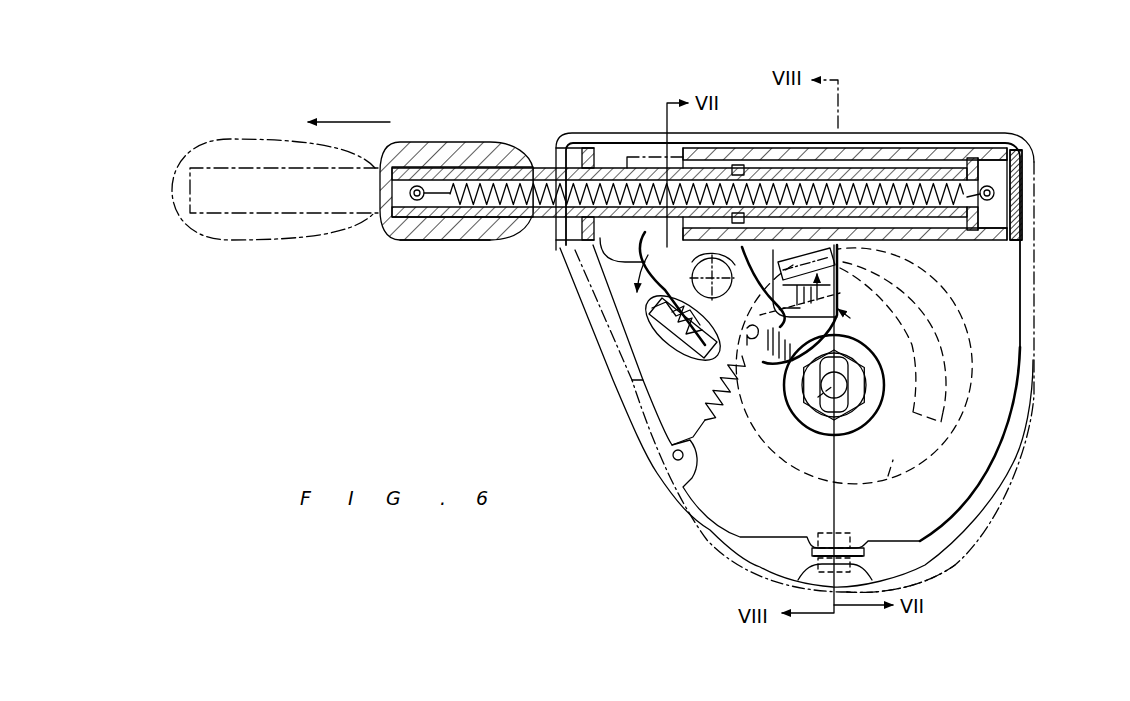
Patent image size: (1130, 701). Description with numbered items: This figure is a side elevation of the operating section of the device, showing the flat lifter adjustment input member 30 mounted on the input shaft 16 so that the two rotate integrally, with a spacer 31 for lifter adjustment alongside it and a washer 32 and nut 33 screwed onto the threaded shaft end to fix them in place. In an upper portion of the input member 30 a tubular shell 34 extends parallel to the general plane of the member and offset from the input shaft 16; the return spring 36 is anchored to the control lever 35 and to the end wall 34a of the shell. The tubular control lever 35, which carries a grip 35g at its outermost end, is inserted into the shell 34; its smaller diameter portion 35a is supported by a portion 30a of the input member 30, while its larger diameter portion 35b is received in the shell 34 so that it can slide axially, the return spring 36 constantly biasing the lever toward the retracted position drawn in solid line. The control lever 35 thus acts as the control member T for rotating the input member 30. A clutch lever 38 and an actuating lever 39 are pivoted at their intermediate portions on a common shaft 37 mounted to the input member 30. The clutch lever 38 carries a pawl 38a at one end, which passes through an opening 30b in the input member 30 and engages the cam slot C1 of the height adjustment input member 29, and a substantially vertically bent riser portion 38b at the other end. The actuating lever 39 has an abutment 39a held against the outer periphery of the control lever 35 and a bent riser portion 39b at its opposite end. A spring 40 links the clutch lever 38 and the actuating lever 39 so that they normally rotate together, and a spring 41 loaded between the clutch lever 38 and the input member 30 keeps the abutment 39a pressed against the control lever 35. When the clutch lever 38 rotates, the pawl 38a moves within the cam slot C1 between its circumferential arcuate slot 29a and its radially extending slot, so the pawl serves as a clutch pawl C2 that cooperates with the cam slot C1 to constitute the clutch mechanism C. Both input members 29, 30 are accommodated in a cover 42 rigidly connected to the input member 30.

The control member T is at (526, 92).
The control lever 35 is at (531, 136).
The grip 35g is at (425, 243).
The lifter adjustment input member 30 is at (1000, 300).
The portion 30a is at (566, 146).
The opening 30b is at (840, 270).
The smaller diameter portion 35a is at (600, 148).
The larger diameter portion 35b is at (873, 160).
The return spring 36 is at (771, 165).
The tubular shell 34 is at (953, 148).
The end cap wall 34a is at (1012, 165).
The clutch mechanism C is at (1050, 250).
The cam slot C1 is at (915, 291).
The clutch pawl C2 is at (878, 340).
The clutch lever 38 is at (766, 392).
The pawl 38a is at (1018, 340).
The riser portion 38b is at (652, 335).
The height adjustment input member 29 is at (893, 460).
The arcuate slot 29a is at (1018, 412).
The cover 42 is at (940, 546).
The spacer 31 is at (850, 423).
The washer 32 is at (818, 413).
The nut 33 is at (857, 395).
The input shaft 16 is at (818, 397).
The common shaft 37 is at (645, 287).
The actuating lever 39 is at (642, 305).
The abutment 39a is at (612, 238).
The riser portion 39b is at (642, 372).
The spring 40 is at (706, 358).
The spring 41 is at (702, 414).